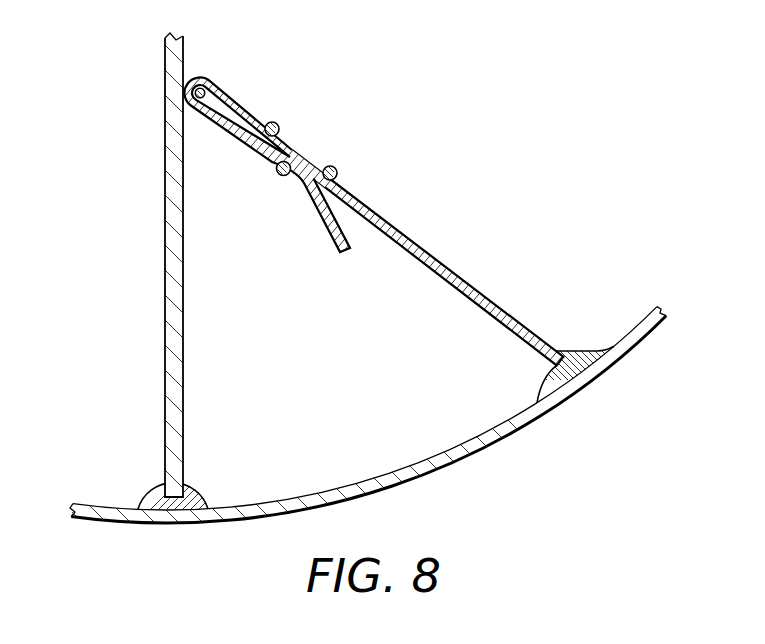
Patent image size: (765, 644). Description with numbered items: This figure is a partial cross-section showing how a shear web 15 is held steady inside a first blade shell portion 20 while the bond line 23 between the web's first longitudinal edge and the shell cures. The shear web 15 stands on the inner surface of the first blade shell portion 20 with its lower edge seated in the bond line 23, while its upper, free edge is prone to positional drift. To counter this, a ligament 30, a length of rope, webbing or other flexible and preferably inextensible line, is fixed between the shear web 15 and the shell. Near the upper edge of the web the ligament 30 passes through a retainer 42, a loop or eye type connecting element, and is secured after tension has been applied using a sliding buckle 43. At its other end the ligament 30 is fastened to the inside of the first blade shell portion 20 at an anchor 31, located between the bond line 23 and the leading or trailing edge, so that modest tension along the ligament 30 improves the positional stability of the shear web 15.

The shear web 15 is at (165, 278).
The first blade shell portion 20 is at (597, 400).
The bond line 23 is at (152, 484).
The ligament 30 is at (443, 265).
The anchor 31 is at (578, 348).
The retainer 42 is at (207, 84).
The sliding buckle 43 is at (298, 147).